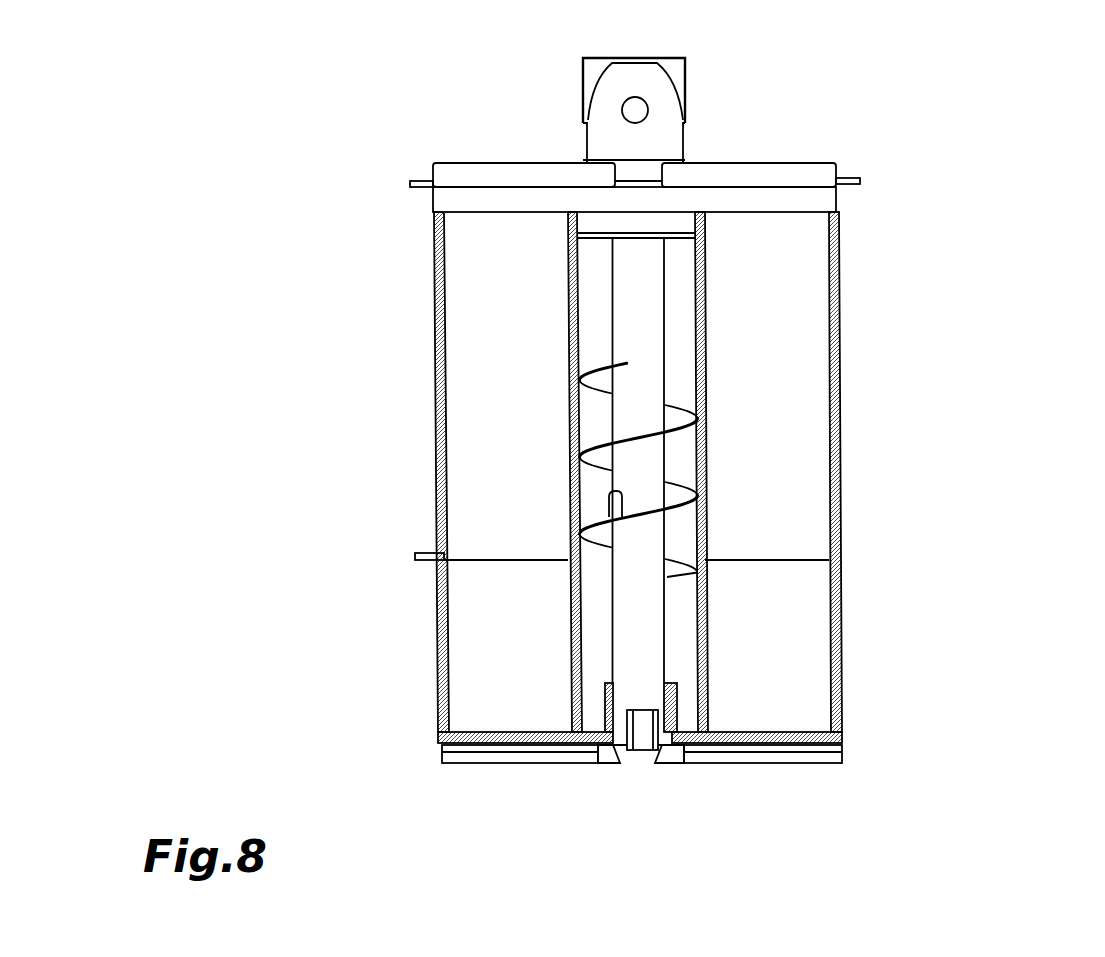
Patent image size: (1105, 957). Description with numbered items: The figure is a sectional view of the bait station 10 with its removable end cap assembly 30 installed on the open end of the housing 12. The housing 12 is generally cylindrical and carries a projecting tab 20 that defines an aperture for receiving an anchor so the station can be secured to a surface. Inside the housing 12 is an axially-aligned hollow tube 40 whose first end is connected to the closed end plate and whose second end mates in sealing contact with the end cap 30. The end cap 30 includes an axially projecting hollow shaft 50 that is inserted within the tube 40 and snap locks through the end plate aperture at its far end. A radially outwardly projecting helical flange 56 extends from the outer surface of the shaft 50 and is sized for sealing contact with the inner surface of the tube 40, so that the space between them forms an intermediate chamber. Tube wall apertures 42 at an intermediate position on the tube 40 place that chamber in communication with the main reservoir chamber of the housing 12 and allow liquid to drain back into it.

The bait station 10 is at (960, 140).
The housing 12 is at (840, 388).
The projecting tab 20 is at (673, 70).
The end cap assembly 30 is at (789, 150).
The hollow tube 40 is at (705, 282).
The tube wall apertures 42 is at (607, 504).
The shaft 50 is at (651, 306).
The helical flange 56 is at (680, 495).